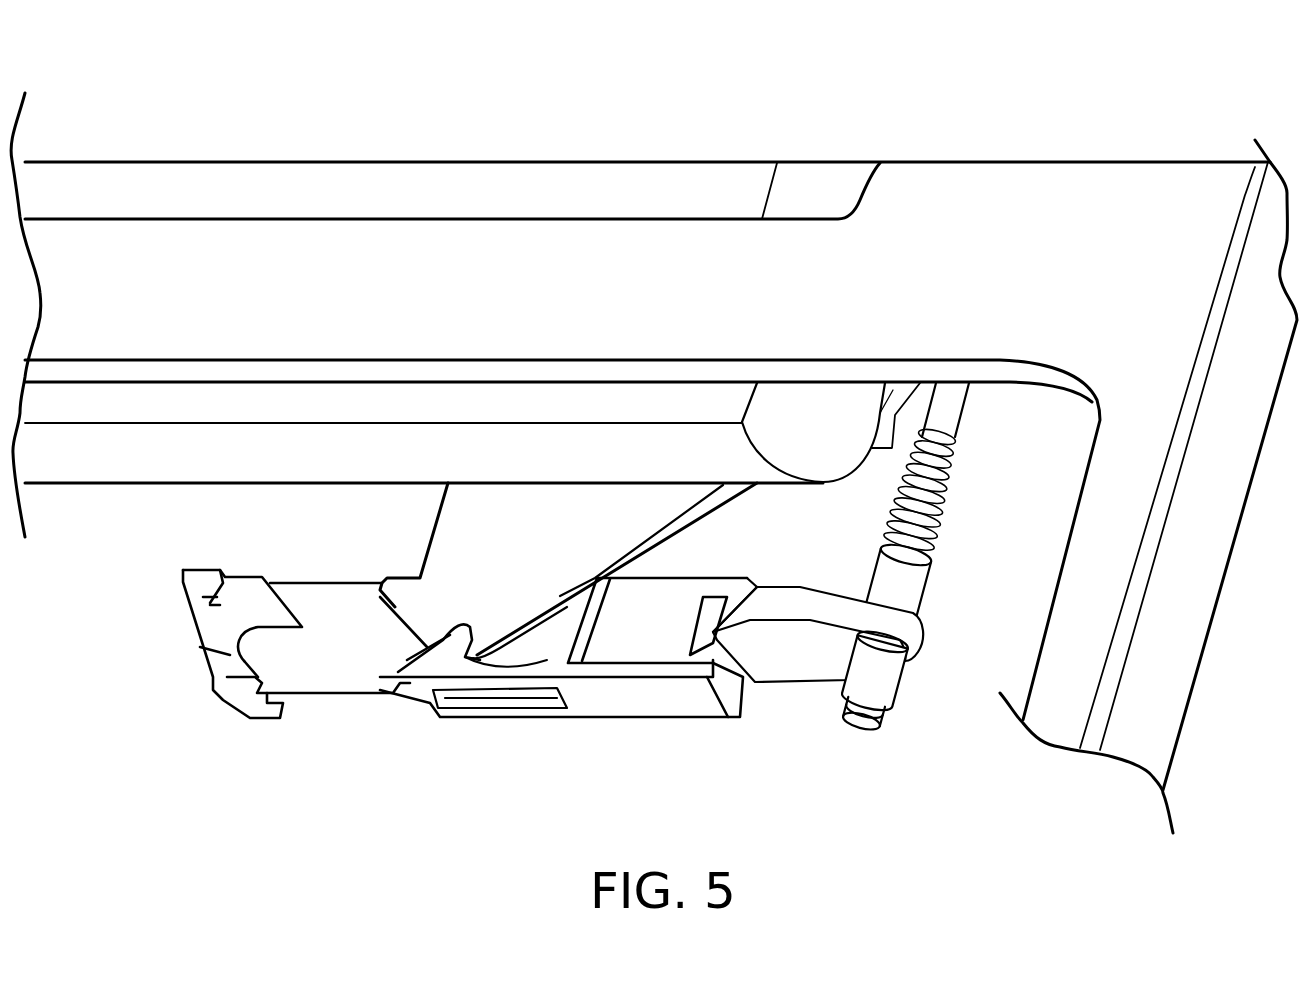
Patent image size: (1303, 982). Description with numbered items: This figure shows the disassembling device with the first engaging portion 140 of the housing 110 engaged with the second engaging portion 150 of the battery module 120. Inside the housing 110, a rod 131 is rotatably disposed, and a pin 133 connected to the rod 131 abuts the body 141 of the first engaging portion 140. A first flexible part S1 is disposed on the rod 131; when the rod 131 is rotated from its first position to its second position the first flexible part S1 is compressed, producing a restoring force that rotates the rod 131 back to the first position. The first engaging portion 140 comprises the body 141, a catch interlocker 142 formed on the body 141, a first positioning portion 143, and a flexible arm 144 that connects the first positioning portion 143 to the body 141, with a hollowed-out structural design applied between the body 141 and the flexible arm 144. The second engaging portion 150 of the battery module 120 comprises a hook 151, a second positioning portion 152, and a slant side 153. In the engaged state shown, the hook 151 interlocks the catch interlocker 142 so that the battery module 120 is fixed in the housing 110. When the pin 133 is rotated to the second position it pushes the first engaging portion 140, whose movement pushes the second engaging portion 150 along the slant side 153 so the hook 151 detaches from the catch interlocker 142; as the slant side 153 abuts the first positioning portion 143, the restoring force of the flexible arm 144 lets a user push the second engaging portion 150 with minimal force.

The housing 110 is at (1080, 197).
The battery module 120 is at (290, 193).
The rod 131 is at (963, 405).
The first flexible part S1 is at (950, 503).
The pin 133 is at (903, 633).
The second engaging portion 150 is at (718, 57).
The hook 151 is at (402, 600).
The second positioning portion 152 is at (475, 648).
The slant side 153 is at (662, 542).
The first engaging portion 140 is at (550, 848).
The body 141 is at (327, 697).
The catch interlocker 142 is at (267, 645).
The first positioning portion 143 is at (443, 665).
The flexible arm 144 is at (523, 672).